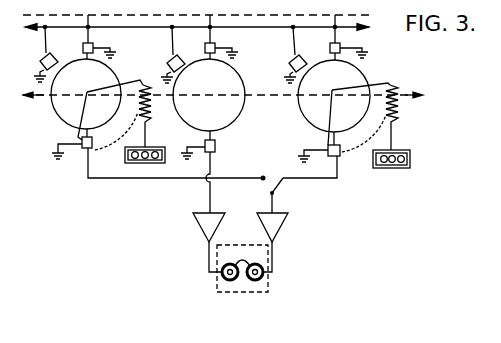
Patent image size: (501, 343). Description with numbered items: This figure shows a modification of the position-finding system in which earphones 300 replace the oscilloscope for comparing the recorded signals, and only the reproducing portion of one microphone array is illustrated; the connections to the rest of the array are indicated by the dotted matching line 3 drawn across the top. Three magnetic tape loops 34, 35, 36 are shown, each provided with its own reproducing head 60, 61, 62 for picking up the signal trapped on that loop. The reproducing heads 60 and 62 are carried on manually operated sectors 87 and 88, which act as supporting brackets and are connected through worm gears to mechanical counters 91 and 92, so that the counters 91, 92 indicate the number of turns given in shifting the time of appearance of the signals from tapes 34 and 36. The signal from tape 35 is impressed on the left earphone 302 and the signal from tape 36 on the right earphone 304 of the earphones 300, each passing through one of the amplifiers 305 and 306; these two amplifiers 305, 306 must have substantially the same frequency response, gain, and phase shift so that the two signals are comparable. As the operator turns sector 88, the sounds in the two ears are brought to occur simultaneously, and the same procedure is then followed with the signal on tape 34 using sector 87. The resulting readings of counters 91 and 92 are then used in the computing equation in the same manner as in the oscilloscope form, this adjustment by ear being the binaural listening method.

The dotted matching line 3 is at (195, 16).
The magnetic tape loop 34 is at (51, 110).
The magnetic tape loop 35 is at (243, 108).
The magnetic tape loop 36 is at (308, 124).
The reproducing head 60 is at (93, 144).
The reproducing head 61 is at (216, 148).
The reproducing head 62 is at (341, 149).
The sector 87 is at (130, 81).
The sector 88 is at (380, 84).
The mechanical counter 91 is at (145, 163).
The mechanical counter 92 is at (393, 168).
The earphones 300 is at (247, 283).
The left earphone 302 is at (223, 279).
The right earphone 304 is at (262, 279).
The amplifier 305 is at (201, 227).
The amplifier 306 is at (280, 229).